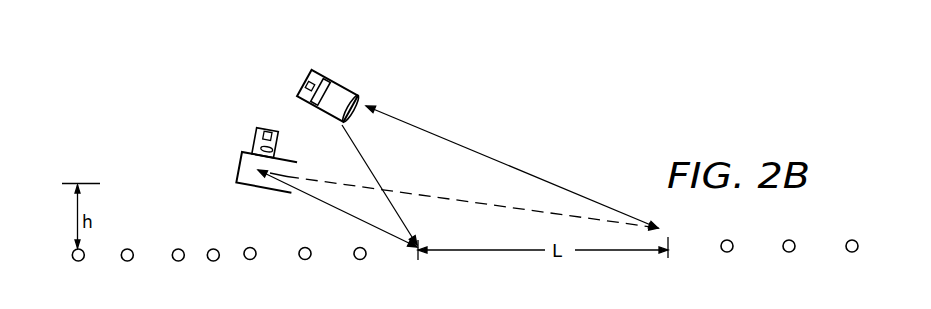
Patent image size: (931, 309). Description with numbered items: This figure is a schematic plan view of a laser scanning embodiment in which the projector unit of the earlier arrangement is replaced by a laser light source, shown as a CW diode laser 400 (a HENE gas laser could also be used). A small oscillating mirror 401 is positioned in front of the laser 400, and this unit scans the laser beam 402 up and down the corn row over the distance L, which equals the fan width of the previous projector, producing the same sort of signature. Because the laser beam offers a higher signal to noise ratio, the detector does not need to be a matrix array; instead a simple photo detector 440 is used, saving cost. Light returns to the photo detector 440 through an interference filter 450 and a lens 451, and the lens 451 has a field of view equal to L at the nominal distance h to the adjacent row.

The CW diode laser 400 is at (257, 129).
The oscillating mirror 401 is at (256, 171).
The laser beam 402 is at (340, 209).
The photo detector 440 is at (352, 77).
The interference filter 450 is at (337, 84).
The lens 451 is at (360, 97).